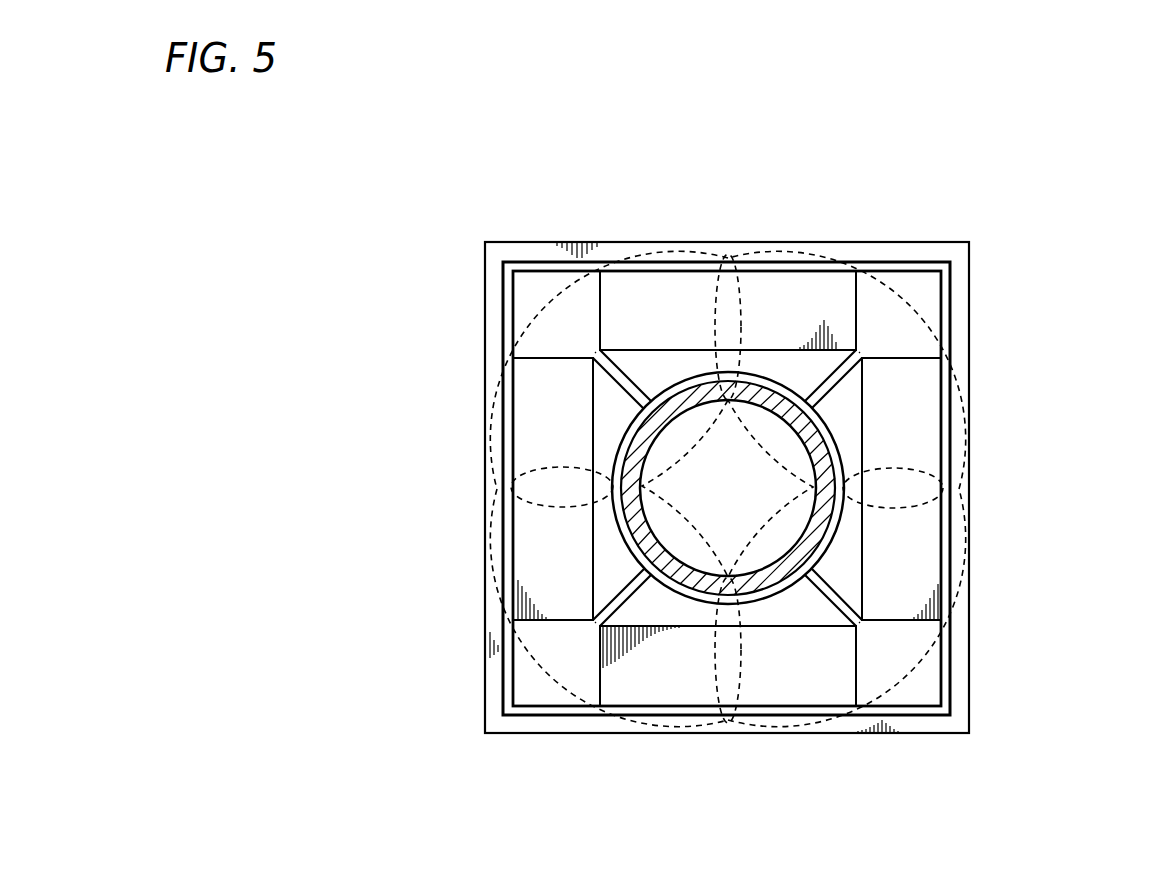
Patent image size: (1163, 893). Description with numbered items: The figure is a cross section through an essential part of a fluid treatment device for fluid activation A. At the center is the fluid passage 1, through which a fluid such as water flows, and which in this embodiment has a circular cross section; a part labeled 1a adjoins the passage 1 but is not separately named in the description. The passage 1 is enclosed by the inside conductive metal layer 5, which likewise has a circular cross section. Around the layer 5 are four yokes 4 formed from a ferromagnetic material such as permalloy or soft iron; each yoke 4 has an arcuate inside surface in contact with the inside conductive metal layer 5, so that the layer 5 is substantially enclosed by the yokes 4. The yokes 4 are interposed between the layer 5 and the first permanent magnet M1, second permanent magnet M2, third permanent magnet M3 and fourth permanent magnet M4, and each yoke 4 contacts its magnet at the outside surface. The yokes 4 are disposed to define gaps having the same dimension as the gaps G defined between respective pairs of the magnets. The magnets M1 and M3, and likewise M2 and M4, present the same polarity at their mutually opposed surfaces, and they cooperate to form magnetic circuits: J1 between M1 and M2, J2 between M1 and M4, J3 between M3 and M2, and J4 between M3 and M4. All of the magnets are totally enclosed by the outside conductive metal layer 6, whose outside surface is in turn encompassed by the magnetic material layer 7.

The fluid passage 1 is at (700, 492).
The outer peripheral surface of rotor 1a is at (837, 452).
The yoke 4 is at (655, 375).
The inside conductive metal layer 5 is at (825, 432).
The outside conductive metal layer 6 is at (943, 285).
The magnetic material layer 7 is at (533, 248).
The fluid treatment device for fluid activation A is at (1044, 183).
The gap G is at (593, 355).
The magnetic circuit J1 is at (655, 253).
The magnetic circuit J2 is at (950, 365).
The magnetic circuit J3 is at (549, 677).
The magnetic circuit J4 is at (914, 668).
The first permanent magnet M1 is at (800, 300).
The second permanent magnet M2 is at (540, 425).
The third permanent magnet M3 is at (662, 680).
The fourth permanent magnet M4 is at (918, 419).